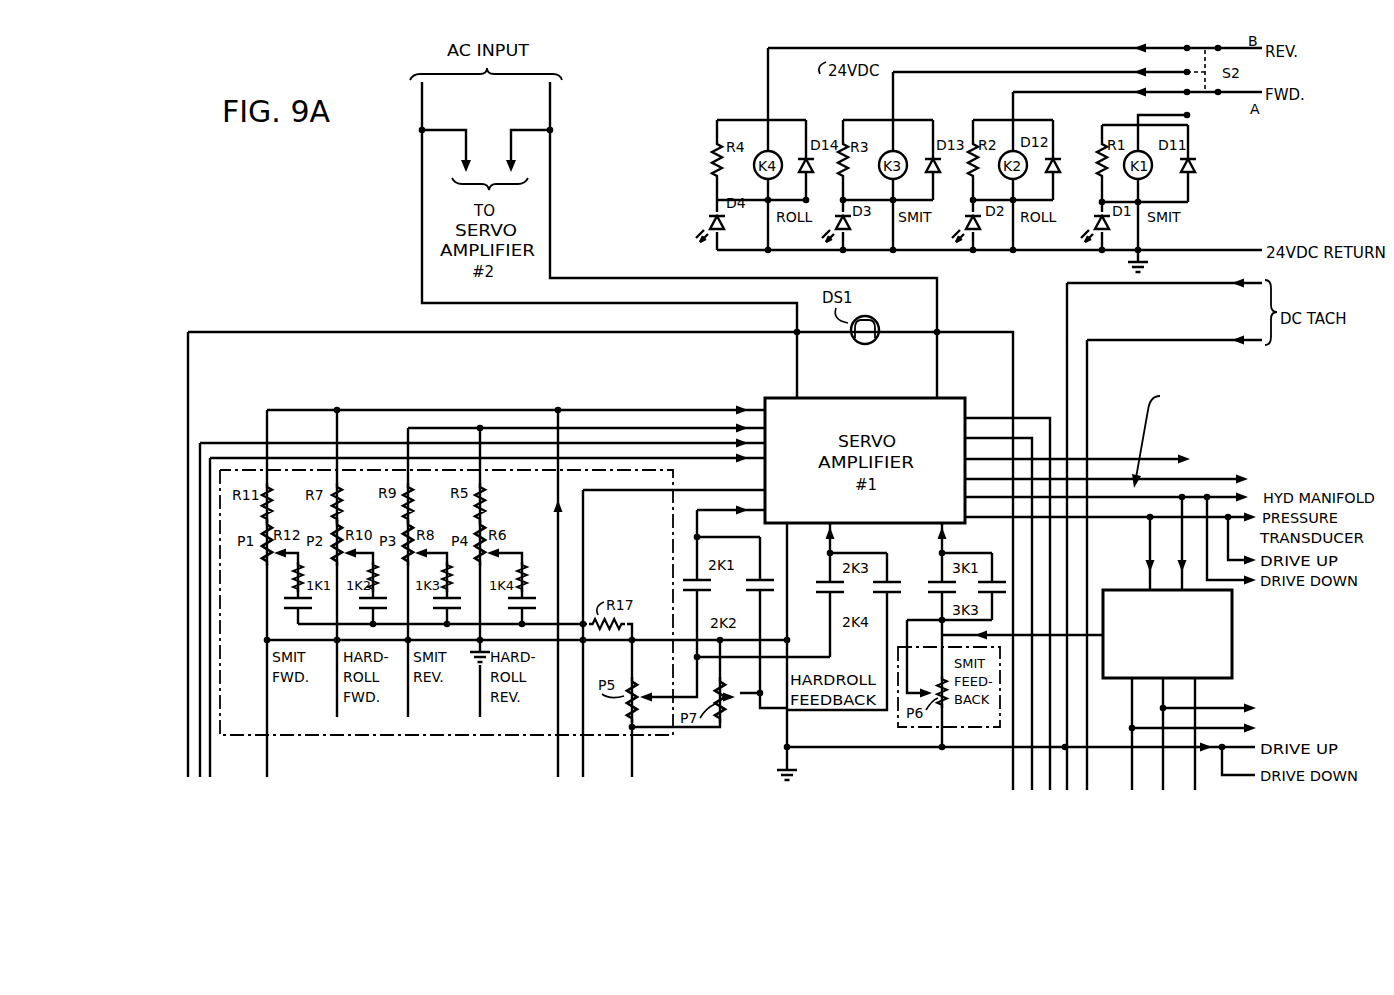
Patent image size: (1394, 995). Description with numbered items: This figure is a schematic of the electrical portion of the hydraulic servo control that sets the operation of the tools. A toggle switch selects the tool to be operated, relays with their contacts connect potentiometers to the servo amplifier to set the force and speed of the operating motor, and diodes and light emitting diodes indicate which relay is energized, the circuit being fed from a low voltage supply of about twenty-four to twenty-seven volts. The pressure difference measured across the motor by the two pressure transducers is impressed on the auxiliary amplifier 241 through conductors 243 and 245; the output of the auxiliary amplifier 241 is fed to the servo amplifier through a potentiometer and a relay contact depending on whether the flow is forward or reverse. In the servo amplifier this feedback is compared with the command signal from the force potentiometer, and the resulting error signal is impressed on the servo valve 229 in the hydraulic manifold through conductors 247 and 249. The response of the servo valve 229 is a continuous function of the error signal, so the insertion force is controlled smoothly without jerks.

The servo valve 229 is at (1287, 460).
The auxiliary amplifier 241 is at (1130, 588).
The conductor 243 is at (1240, 736).
The conductor 245 is at (1240, 713).
The conductor 247 is at (1133, 462).
The conductor 249 is at (1145, 472).